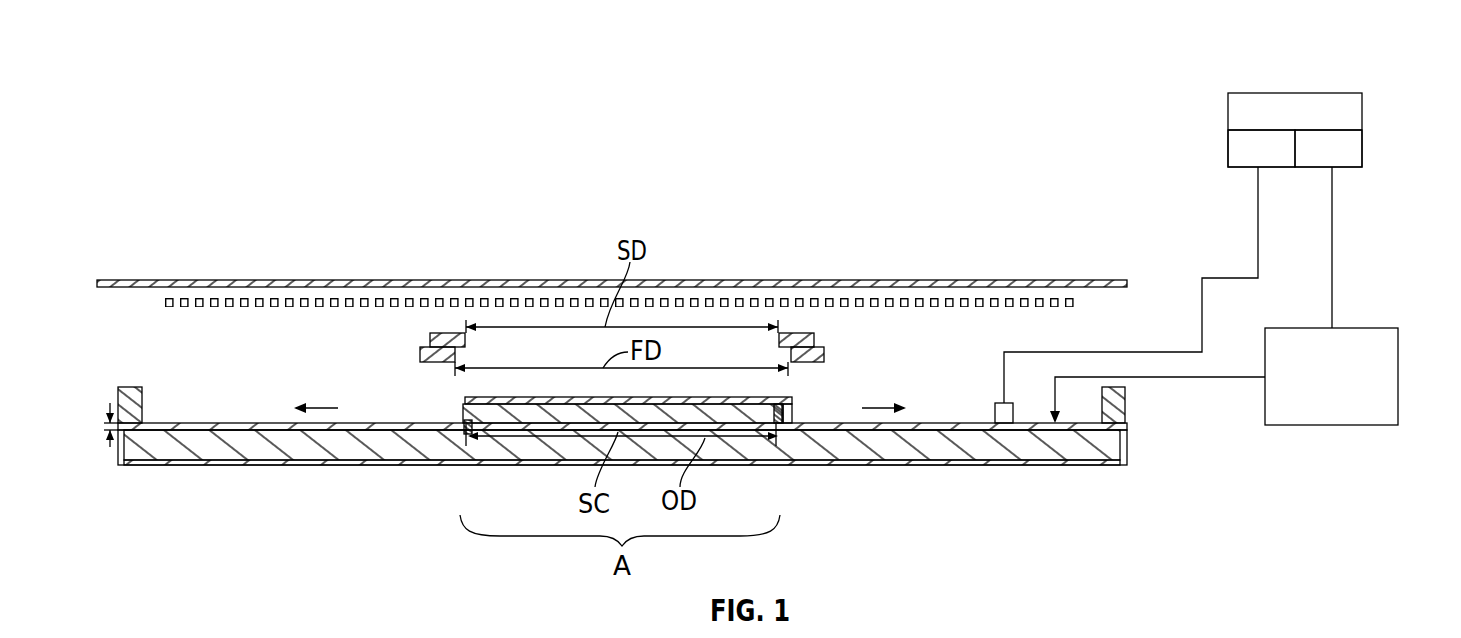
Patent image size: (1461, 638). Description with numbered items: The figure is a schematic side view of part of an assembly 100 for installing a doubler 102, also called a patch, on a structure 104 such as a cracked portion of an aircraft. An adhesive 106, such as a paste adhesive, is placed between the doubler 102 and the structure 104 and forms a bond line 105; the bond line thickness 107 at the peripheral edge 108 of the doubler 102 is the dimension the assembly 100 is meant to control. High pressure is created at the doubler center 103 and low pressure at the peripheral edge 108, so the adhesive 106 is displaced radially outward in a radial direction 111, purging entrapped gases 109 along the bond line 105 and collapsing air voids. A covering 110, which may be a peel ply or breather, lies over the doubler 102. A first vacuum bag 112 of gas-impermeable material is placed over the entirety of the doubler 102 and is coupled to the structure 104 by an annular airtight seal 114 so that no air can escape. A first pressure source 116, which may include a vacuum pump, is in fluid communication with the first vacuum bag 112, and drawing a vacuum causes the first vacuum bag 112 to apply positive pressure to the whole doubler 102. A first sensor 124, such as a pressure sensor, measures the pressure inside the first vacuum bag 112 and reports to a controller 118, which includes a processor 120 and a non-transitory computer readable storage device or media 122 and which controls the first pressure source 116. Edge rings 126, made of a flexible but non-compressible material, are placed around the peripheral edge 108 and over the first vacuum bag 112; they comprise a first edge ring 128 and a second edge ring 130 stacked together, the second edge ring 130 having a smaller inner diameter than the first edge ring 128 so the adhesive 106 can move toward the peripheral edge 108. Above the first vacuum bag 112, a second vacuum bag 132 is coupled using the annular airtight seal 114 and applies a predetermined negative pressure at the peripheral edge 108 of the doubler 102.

The assembly 100 is at (1144, 70).
The doubler 102 is at (790, 412).
The doubler center 103 is at (716, 410).
The structure 104 is at (1130, 450).
The bond line 105 is at (520, 432).
The adhesive 106 is at (775, 438).
The bond line thickness 107 is at (110, 447).
The peripheral edge 108 is at (466, 422).
The entrapped gases 109 is at (774, 414).
The covering 110 is at (522, 398).
The radial direction 111 is at (320, 407).
The first vacuum bag 112 is at (196, 423).
The annular airtight seal 114 is at (132, 387).
The first pressure source 116 is at (1337, 328).
The controller 118 is at (1230, 108).
The processor 120 is at (1230, 150).
The non-transitory computer readable storage device or media 122 is at (1352, 147).
The first sensor 124 is at (1000, 413).
The edge rings 126 is at (847, 344).
The first edge ring 128 is at (420, 355).
The second edge ring 130 is at (436, 342).
The second vacuum bag 132 is at (1135, 278).